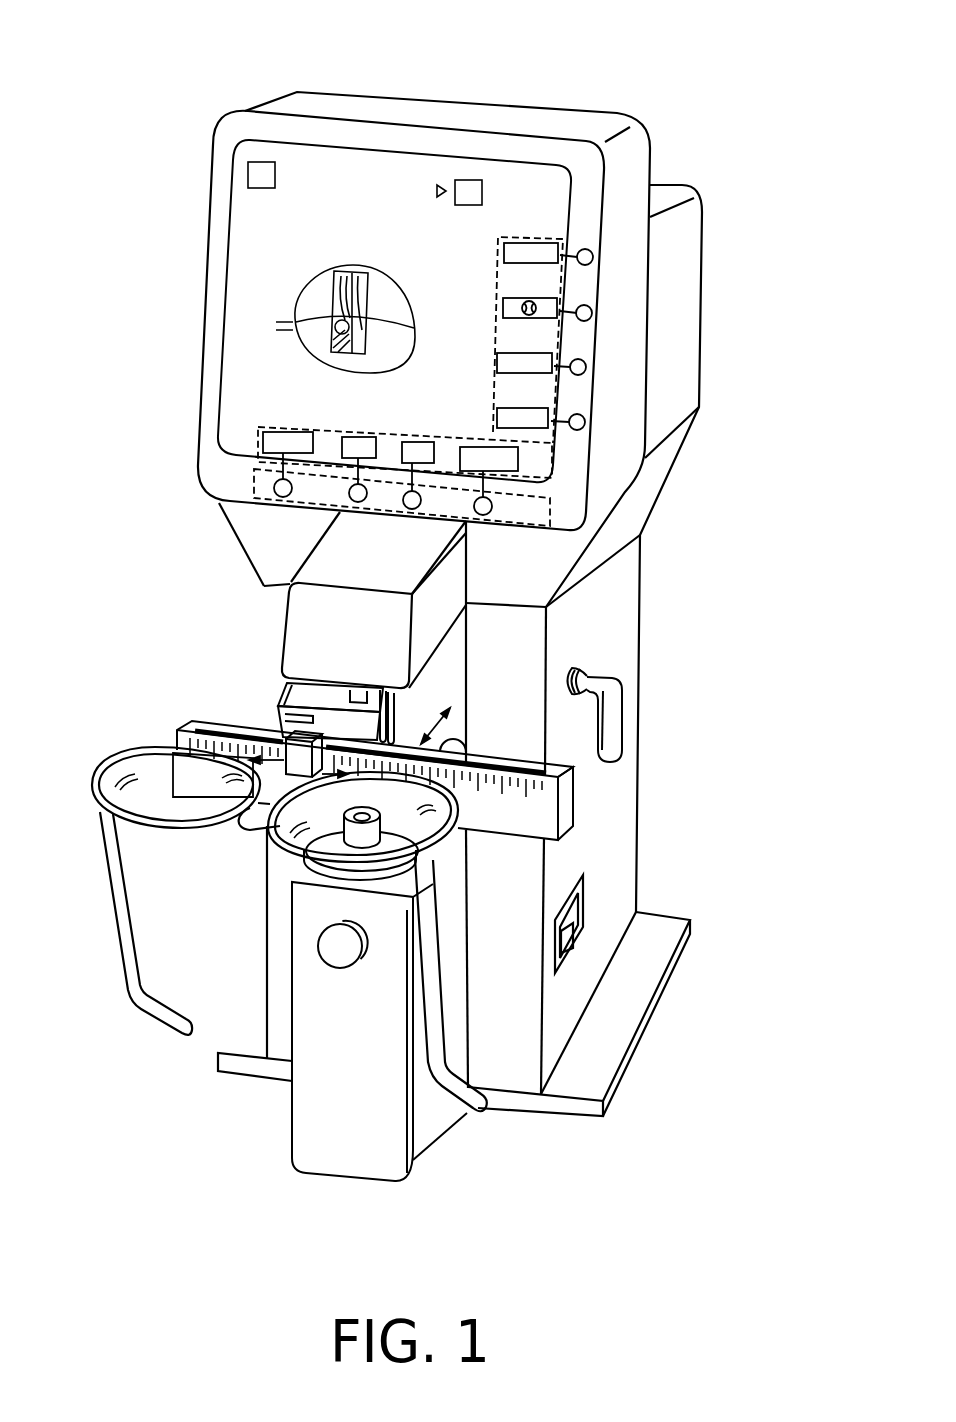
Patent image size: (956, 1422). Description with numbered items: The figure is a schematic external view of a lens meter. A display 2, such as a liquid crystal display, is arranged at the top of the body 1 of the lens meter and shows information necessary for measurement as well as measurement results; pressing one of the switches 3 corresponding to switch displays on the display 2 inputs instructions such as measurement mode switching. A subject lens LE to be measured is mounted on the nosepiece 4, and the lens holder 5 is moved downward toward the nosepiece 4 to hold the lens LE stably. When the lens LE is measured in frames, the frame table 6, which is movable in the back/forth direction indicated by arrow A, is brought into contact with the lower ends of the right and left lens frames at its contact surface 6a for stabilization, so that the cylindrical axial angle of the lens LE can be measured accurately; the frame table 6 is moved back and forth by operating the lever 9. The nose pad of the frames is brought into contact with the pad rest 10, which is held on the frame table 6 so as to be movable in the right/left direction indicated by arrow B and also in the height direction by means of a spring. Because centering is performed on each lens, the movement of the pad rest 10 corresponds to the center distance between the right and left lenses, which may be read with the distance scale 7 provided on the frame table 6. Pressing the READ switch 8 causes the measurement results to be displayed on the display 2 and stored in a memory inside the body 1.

The body 1 is at (668, 109).
The display 2 is at (273, 288).
The switches 3 is at (262, 485).
The nosepiece 4 is at (345, 870).
The lens holder 5 is at (270, 712).
The frame table 6 is at (473, 810).
The contact surface 6a is at (517, 817).
The distance scale 7 is at (570, 796).
The READ switch 8 is at (338, 950).
The lever 9 is at (615, 720).
The pad rest 10 is at (277, 800).
The subject lens LE is at (393, 840).
The back/forth direction A is at (432, 720).
The right/left direction B is at (298, 780).